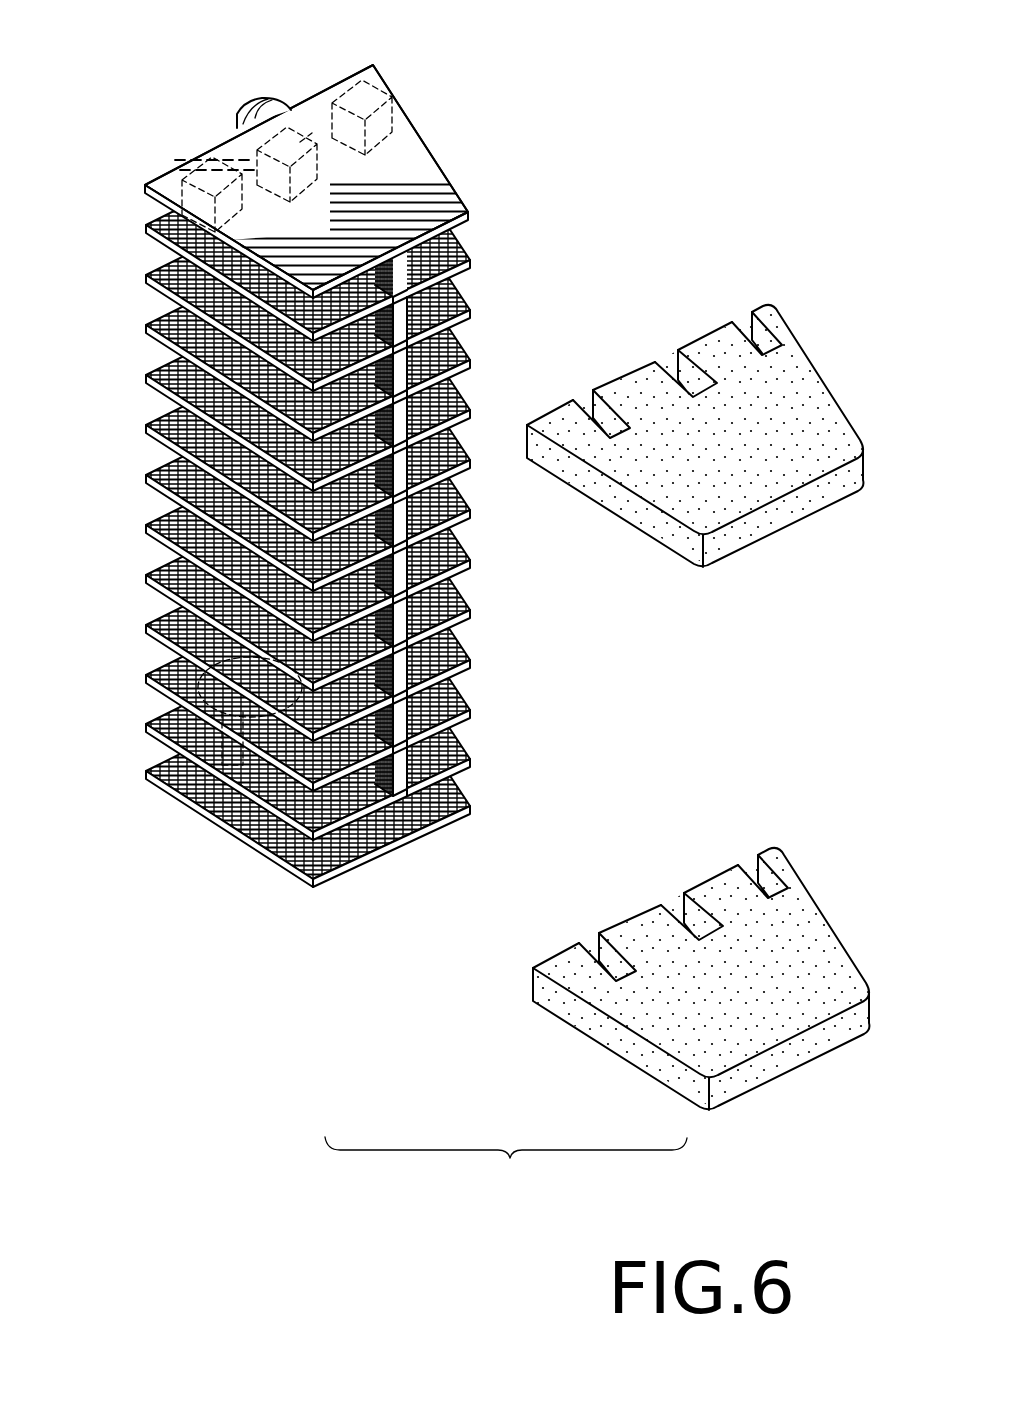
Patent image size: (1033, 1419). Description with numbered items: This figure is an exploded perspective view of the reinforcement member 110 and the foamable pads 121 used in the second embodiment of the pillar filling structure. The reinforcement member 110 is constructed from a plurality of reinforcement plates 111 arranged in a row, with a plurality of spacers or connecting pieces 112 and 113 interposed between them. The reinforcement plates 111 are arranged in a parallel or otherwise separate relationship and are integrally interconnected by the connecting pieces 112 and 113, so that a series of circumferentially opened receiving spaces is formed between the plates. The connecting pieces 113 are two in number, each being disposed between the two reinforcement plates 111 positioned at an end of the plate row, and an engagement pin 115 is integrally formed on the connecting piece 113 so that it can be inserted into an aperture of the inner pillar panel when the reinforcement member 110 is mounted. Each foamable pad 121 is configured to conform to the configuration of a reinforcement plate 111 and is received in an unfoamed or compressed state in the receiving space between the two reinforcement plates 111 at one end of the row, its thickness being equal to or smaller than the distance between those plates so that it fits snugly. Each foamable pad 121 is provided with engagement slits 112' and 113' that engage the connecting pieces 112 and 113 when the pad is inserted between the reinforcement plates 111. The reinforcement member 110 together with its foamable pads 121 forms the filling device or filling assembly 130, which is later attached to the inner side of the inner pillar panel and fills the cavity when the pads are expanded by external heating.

The reinforcement member 110 is at (322, 443).
The reinforcement plate 111 is at (440, 212).
The connecting piece 112 is at (349, 399).
The connecting piece 113 is at (310, 80).
The engagement pin 115 is at (256, 84).
The foamable pad 121 is at (717, 664).
The engagement slit 112' is at (664, 600).
The engagement slit 113' is at (669, 595).
The filling device or filling assembly 130 is at (616, 713).